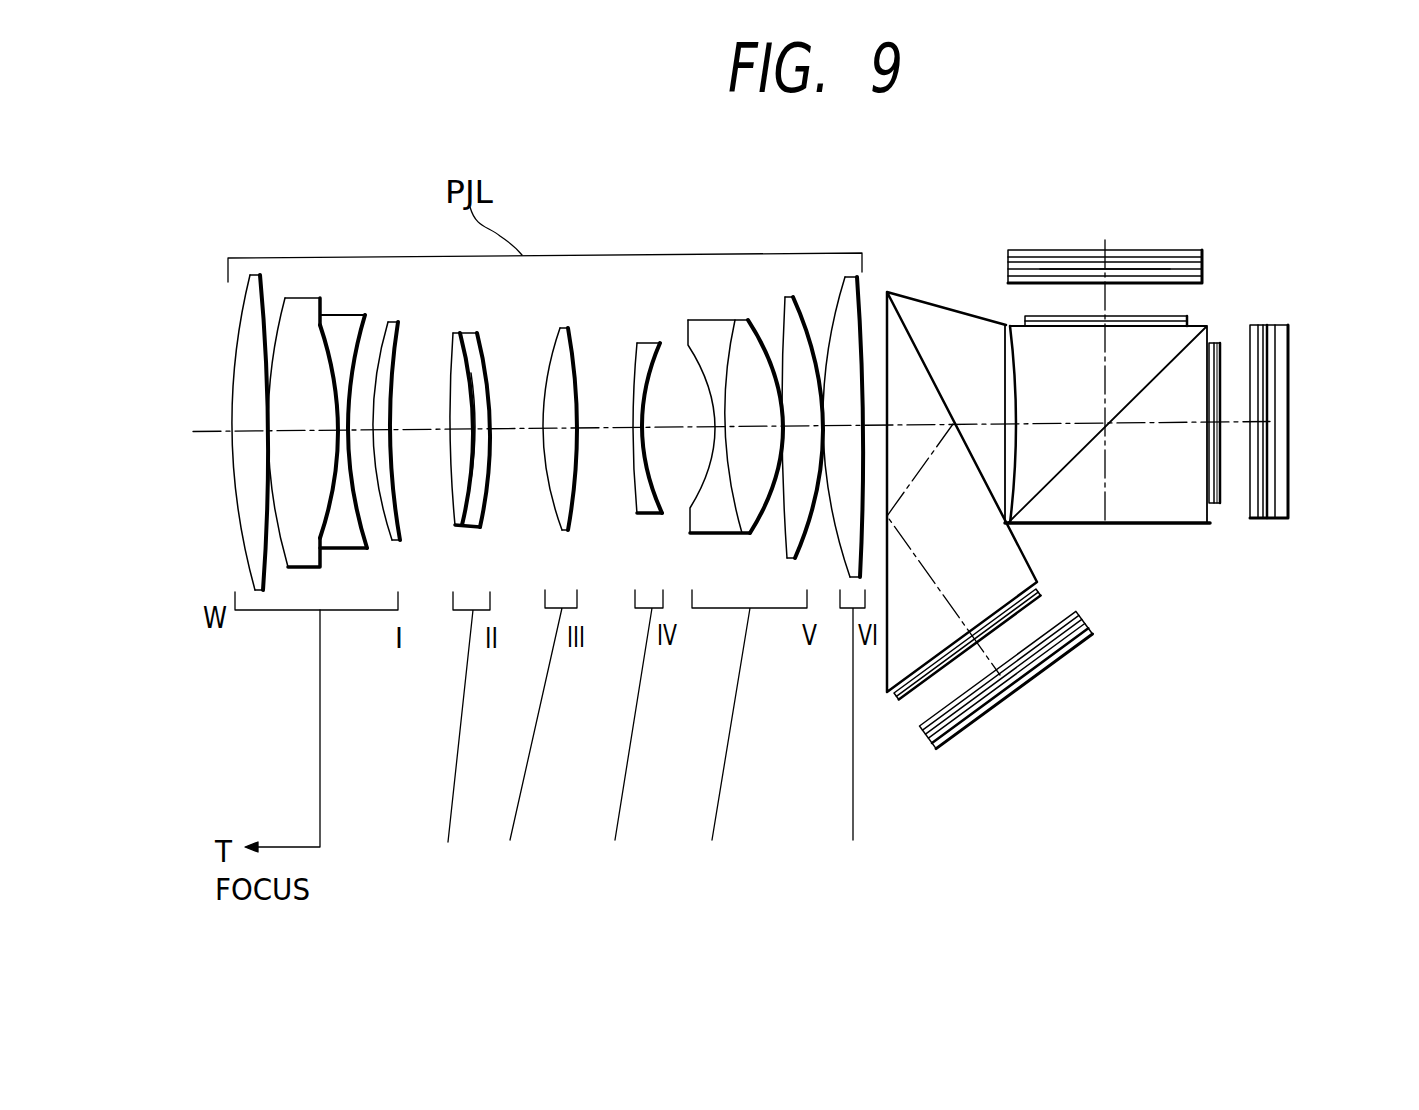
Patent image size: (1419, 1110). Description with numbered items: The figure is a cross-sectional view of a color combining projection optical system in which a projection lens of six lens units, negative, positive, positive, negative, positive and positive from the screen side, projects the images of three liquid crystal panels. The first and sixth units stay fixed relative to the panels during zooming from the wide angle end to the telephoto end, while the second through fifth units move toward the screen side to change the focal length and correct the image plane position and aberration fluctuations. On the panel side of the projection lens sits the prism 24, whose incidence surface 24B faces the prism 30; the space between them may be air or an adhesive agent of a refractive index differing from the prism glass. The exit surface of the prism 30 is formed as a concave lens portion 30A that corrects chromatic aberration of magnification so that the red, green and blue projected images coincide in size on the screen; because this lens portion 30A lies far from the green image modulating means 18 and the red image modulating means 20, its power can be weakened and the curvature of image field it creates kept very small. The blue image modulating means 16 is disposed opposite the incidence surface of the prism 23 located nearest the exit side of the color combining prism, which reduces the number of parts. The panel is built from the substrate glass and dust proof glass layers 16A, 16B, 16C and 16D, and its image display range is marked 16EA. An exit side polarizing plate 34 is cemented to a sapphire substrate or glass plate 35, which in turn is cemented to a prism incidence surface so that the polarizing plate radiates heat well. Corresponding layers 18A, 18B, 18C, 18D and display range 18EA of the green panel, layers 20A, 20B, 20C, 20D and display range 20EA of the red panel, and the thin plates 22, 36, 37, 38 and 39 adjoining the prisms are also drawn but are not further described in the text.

The blue image modulating means 16 is at (980, 726).
The substrate glass 16A is at (1080, 611).
The substrate glass 16B is at (1083, 617).
The dust proof glass 16C is at (1088, 625).
The dust proof glass 16D is at (1091, 634).
The image display range 16EA is at (1036, 671).
The green image modulating means 18 is at (1288, 375).
The layer of image display element 18 18A is at (1255, 325).
The layer of image display element 18 18B is at (1262, 325).
The layer of image display element 18 18C is at (1270, 323).
The layer of image display element 18 18D is at (1277, 323).
The effective display area of image display element 18 18EA is at (1270, 435).
The red image modulating means 20 is at (1070, 249).
The layer of image display element 20 20A is at (1008, 277).
The layer of image display element 20 20B is at (1008, 267).
The layer of image display element 20 20C is at (1007, 258).
The layer of image display element 20 20D is at (1003, 250).
The effective display area of image display element 20 20EA is at (1133, 262).
The polarizing plate 22 is at (1210, 505).
The prism 23 is at (893, 692).
The prism 24 is at (900, 288).
The incidence surface of prism 24B is at (1004, 372).
The prism 30 is at (1188, 323).
The lens portion 30A is at (1010, 360).
The exit side polarizing plate 34 is at (1188, 316).
The sapphire substrate or glass plate 35 is at (1188, 320).
The wave plate 36 is at (1222, 505).
The polarizing plate 37 is at (1217, 505).
The polarizing plate 38 is at (907, 700).
The wave plate 39 is at (898, 697).